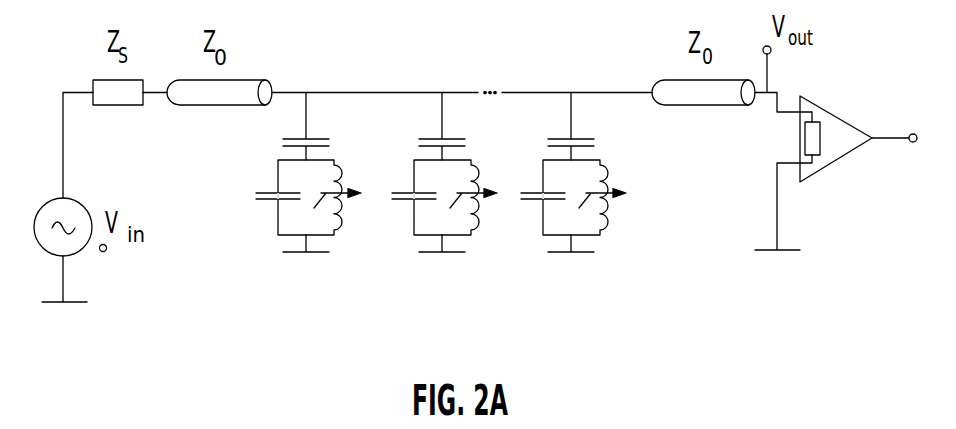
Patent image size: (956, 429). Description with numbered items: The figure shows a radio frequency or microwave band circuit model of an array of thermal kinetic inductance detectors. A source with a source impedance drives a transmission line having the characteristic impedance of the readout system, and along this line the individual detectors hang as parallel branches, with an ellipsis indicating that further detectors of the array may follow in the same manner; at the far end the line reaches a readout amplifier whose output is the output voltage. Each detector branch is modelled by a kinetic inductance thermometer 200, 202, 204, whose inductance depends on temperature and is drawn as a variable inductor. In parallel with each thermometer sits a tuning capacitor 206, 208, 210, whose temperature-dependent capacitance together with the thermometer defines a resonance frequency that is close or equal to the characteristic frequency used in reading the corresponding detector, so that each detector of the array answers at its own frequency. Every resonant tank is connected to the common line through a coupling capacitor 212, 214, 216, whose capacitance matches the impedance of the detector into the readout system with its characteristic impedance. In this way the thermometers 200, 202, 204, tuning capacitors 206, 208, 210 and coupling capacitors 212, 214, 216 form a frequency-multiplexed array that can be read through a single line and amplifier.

The kinetic inductance thermometer 200 is at (298, 189).
The kinetic inductance thermometer 202 is at (435, 189).
The kinetic inductance thermometer 204 is at (565, 190).
The tuning capacitor 206 is at (267, 192).
The tuning capacitor 208 is at (411, 192).
The tuning capacitor 210 is at (538, 192).
The coupling capacitor 212 is at (315, 136).
The coupling capacitor 214 is at (450, 136).
The coupling capacitor 216 is at (583, 136).